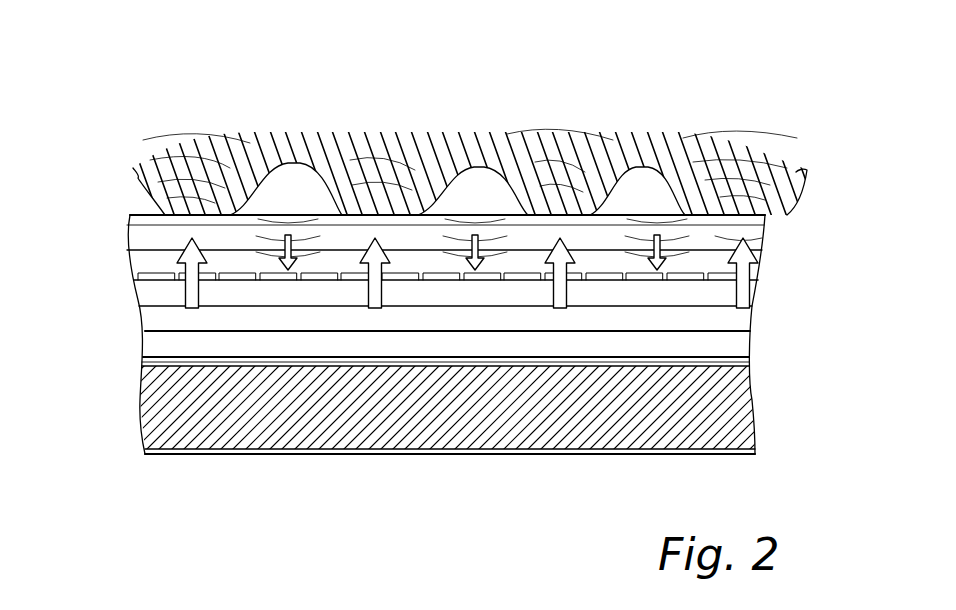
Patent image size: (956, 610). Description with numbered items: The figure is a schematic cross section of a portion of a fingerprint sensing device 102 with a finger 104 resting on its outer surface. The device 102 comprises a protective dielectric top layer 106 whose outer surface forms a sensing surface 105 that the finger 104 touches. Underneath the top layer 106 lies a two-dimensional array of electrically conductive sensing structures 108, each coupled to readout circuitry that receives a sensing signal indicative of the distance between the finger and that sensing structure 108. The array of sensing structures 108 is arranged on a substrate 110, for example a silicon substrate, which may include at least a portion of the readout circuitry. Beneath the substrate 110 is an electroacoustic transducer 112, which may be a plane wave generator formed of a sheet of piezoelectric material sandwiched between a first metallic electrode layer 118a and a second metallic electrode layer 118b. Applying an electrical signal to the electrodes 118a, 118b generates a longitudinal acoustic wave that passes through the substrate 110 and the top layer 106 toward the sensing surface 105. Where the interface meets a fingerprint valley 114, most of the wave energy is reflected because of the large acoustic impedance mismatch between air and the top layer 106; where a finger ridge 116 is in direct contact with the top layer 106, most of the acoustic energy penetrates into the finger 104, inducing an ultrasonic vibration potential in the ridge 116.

The fingerprint sensing device 102 is at (123, 193).
The finger 104 is at (797, 128).
The sensing surface 105 is at (683, 212).
The protective dielectric top layer 106 is at (767, 252).
The electrically conductive sensing structures 108 is at (150, 277).
The substrate 110 is at (747, 327).
The electroacoustic transducer 112 is at (730, 407).
The fingerprint valley 114 is at (290, 188).
The finger ridge 116 is at (583, 211).
The first metallic electrode layer 118a is at (143, 367).
The second metallic electrode layer 118b is at (755, 453).